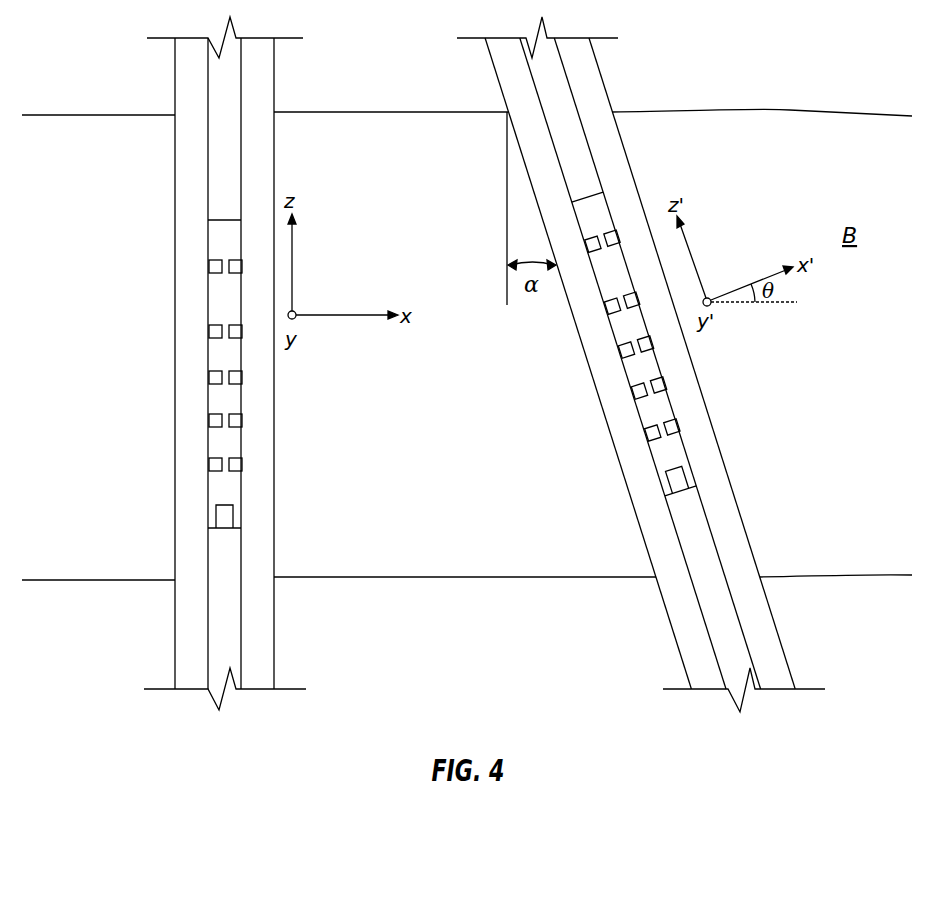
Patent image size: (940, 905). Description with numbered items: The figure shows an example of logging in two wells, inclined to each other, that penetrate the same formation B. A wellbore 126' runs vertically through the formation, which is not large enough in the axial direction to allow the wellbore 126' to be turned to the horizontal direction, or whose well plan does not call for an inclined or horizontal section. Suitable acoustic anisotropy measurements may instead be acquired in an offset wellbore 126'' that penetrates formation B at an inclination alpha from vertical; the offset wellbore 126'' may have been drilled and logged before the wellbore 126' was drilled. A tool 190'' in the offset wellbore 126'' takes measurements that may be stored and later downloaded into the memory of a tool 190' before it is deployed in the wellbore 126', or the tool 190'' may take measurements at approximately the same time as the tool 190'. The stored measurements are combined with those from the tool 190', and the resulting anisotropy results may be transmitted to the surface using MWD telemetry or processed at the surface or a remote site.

The wellbore 126' is at (194, 363).
The tool 190' is at (169, 366).
The offset wellbore 126'' is at (649, 364).
The tool 190'' is at (661, 325).